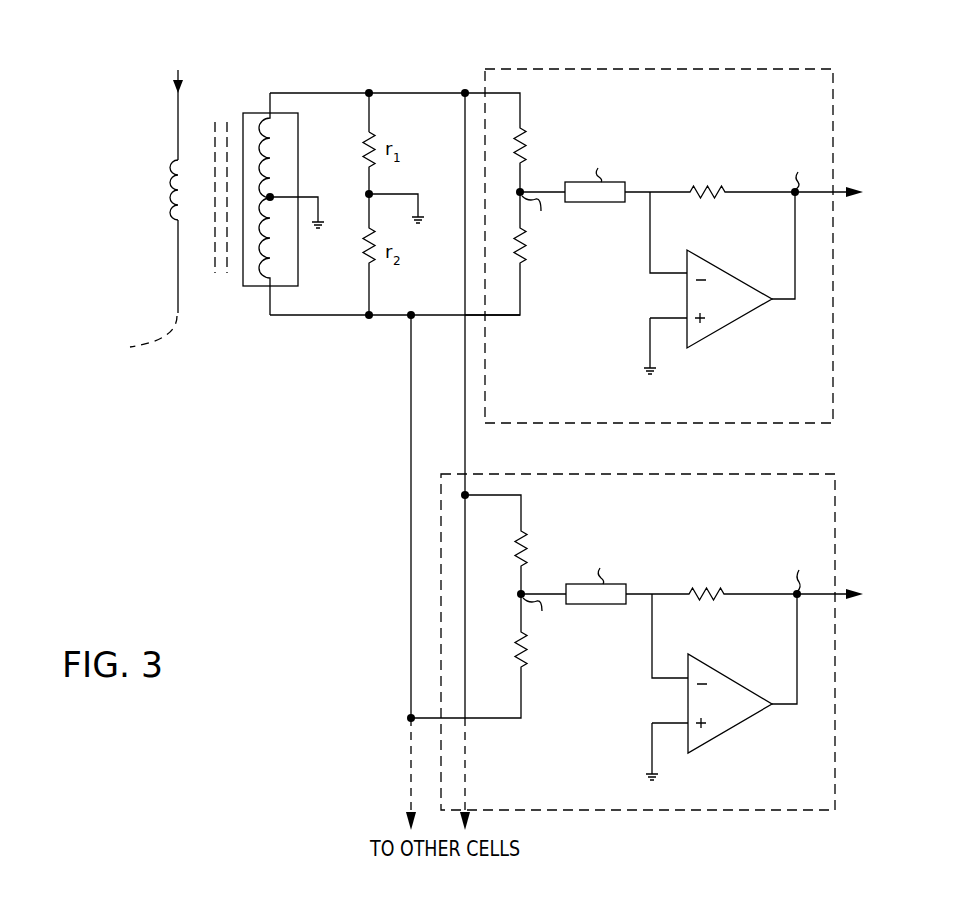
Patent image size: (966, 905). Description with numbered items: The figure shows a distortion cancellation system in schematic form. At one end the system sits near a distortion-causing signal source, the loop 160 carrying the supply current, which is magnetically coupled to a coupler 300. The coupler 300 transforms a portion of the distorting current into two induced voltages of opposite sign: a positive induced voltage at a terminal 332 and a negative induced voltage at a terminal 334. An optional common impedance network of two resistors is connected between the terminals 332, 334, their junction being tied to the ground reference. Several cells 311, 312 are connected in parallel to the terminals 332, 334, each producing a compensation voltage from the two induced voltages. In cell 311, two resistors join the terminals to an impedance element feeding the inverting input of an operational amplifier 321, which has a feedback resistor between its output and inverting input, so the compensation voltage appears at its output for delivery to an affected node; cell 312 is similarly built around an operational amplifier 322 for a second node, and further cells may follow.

The loop 160 is at (180, 316).
The coupler 300 is at (258, 284).
The terminal 332 is at (369, 92).
The terminal 334 is at (369, 316).
The cell 311 is at (797, 413).
The cell 312 is at (806, 801).
The operational amplifier 321 is at (740, 320).
The operational amplifier 322 is at (740, 725).